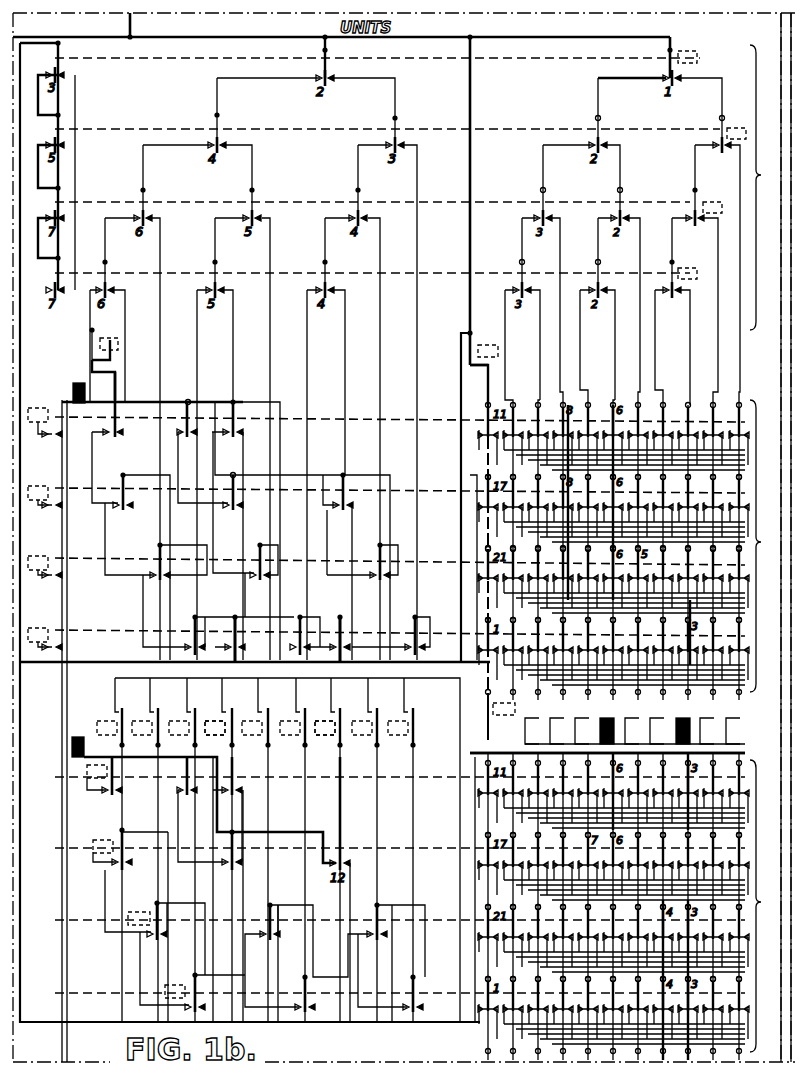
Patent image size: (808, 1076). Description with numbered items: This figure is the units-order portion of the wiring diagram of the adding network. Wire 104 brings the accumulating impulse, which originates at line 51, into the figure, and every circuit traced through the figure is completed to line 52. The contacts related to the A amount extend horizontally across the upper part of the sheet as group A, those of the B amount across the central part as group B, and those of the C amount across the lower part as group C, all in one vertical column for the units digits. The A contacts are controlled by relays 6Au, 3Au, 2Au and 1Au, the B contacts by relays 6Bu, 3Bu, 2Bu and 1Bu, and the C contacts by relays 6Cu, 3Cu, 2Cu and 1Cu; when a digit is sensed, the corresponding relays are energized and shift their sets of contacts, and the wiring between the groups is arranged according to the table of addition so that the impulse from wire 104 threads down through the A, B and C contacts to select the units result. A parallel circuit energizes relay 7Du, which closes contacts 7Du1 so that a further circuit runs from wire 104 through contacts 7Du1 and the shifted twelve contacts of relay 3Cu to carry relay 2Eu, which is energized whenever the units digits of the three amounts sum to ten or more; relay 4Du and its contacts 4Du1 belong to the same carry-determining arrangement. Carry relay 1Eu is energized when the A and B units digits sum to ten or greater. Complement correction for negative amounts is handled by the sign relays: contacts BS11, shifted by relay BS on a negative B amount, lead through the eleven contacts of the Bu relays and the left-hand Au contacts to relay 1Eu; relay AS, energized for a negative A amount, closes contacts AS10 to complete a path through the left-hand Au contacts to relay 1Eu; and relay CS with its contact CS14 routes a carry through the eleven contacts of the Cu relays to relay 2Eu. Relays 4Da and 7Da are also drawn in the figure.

The wire 104 is at (125, 24).
The relay 6Au is at (694, 56).
The relay 3Au is at (740, 126).
The relay 2Au is at (713, 201).
The relay 1Au is at (688, 267).
The relay AS is at (108, 337).
The contacts AS10 is at (90, 361).
The carry relay 1Eu is at (73, 385).
The relay 6Bu is at (38, 433).
The relay 3Bu is at (38, 509).
The relay 2Bu is at (38, 579).
The relay 1Bu is at (38, 656).
The carry relay 2Eu is at (72, 745).
The magnet 6Cu is at (87, 772).
The relay 3Cu is at (93, 847).
The relay 2Cu is at (135, 925).
The relay 1Cu is at (165, 997).
The relay BS is at (494, 344).
The contacts BS11 is at (477, 370).
The relay CS is at (493, 705).
The contact CS14 is at (603, 740).
The contacts 4Du1 is at (234, 710).
The contacts 7Du1 is at (340, 710).
The relay 4Du is at (215, 718).
The relay 7Du is at (325, 718).
The relay 4Da is at (605, 722).
The relay 7Da is at (681, 721).
The A amount contacts A is at (762, 187).
The B amount contacts B is at (762, 546).
The C amount contacts C is at (763, 906).
The line 51 is at (781, 336).
The line 52 is at (791, 380).